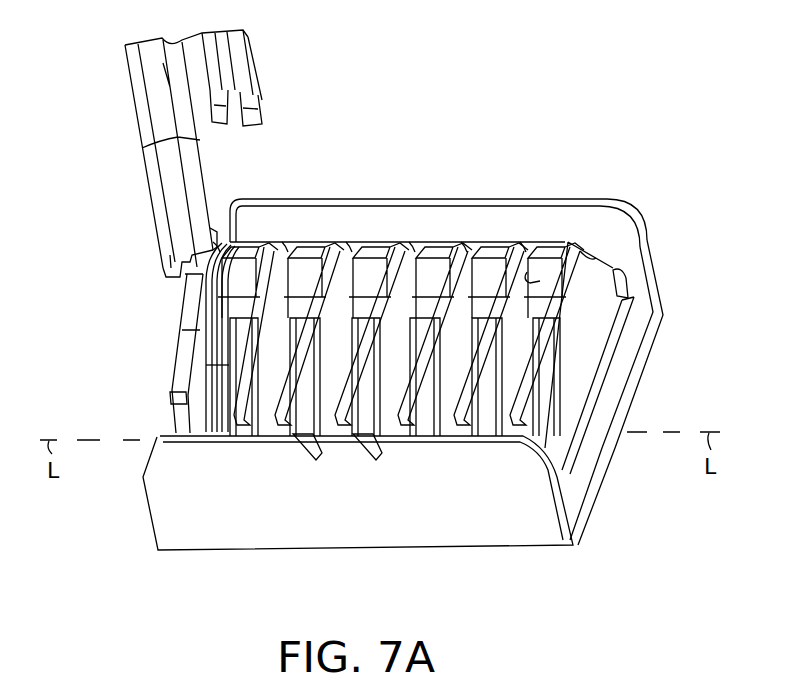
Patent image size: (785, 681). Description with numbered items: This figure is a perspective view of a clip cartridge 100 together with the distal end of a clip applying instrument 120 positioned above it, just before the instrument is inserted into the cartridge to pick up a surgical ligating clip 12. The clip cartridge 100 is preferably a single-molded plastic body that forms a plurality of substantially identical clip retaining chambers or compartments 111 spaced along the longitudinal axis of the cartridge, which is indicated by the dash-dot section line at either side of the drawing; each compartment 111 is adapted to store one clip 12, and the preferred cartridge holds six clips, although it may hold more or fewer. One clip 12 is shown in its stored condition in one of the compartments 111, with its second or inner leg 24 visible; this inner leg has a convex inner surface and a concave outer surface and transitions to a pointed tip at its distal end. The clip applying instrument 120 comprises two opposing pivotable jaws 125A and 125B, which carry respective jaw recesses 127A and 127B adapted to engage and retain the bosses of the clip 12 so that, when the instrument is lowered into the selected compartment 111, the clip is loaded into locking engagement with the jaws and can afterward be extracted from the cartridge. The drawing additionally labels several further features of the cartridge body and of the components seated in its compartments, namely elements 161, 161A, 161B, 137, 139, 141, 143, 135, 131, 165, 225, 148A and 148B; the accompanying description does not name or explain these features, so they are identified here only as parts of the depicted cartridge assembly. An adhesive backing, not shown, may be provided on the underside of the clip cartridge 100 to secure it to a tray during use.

The clip cartridge 100 is at (708, 101).
The clip applying instrument 120 is at (77, 101).
The jaw 125A is at (147, 182).
The jaw 125B is at (252, 38).
The jaw recess 127A is at (213, 230).
The jaw recess 127B is at (235, 128).
The clip compartment 111 is at (531, 230).
The terminal 161 is at (257, 240).
The terminal end portion 161A is at (607, 340).
The terminal end portion 161B is at (168, 381).
The clip 12 is at (212, 299).
The second leg 24 is at (220, 365).
The housing side wall 137 is at (170, 427).
The housing top rim 139 is at (568, 197).
The housing base 141 is at (444, 551).
The housing corner wall 143 is at (630, 233).
The housing end wall 135 is at (650, 287).
The housing end wall edge 131 is at (665, 328).
The terminal contact portion 165 is at (590, 252).
The terminal retention portion 225 is at (533, 277).
The contact tail 148A is at (310, 460).
The contact tail 148B is at (372, 460).